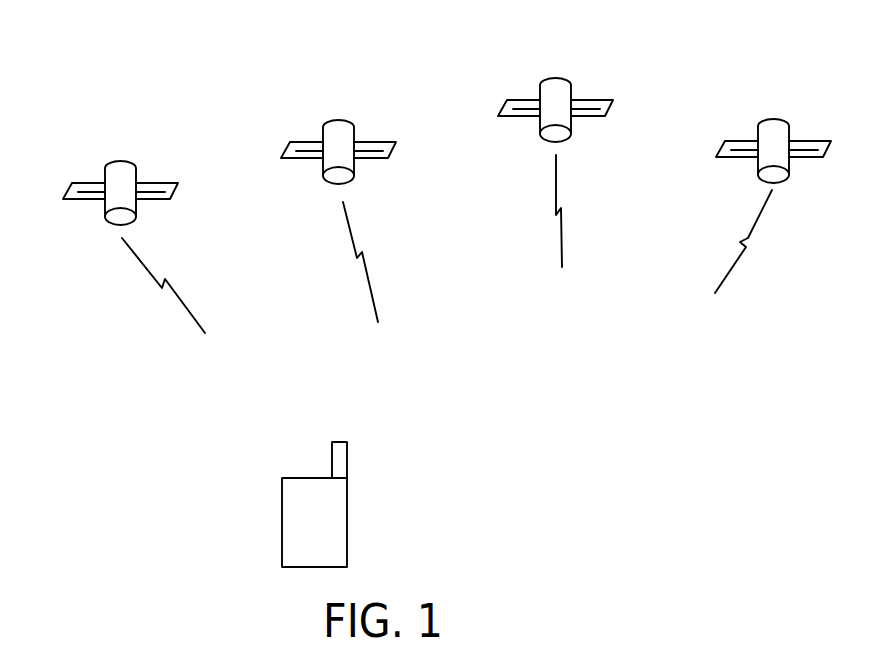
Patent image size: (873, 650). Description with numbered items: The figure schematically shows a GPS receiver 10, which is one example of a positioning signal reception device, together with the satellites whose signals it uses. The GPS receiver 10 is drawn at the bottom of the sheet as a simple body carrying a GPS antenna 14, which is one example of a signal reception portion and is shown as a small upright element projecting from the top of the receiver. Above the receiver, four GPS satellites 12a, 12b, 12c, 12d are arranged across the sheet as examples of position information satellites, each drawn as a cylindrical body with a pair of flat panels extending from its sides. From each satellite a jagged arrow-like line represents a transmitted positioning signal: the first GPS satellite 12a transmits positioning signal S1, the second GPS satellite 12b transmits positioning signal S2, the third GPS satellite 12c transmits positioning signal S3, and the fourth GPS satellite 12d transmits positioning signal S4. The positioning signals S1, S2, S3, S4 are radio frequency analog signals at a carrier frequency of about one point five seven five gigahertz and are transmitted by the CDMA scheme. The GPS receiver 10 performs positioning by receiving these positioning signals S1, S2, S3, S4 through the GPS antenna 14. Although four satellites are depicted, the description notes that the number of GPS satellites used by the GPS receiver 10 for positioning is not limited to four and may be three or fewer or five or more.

The GPS satellite 12a is at (118, 159).
The GPS satellite 12b is at (338, 122).
The GPS satellite 12c is at (555, 80).
The GPS satellite 12d is at (773, 120).
The positioning signal S1 is at (138, 260).
The positioning signal S2 is at (352, 242).
The positioning signal S3 is at (555, 190).
The positioning signal S4 is at (757, 212).
The GPS receiver 10 is at (347, 535).
The GPS antenna 14 is at (347, 455).